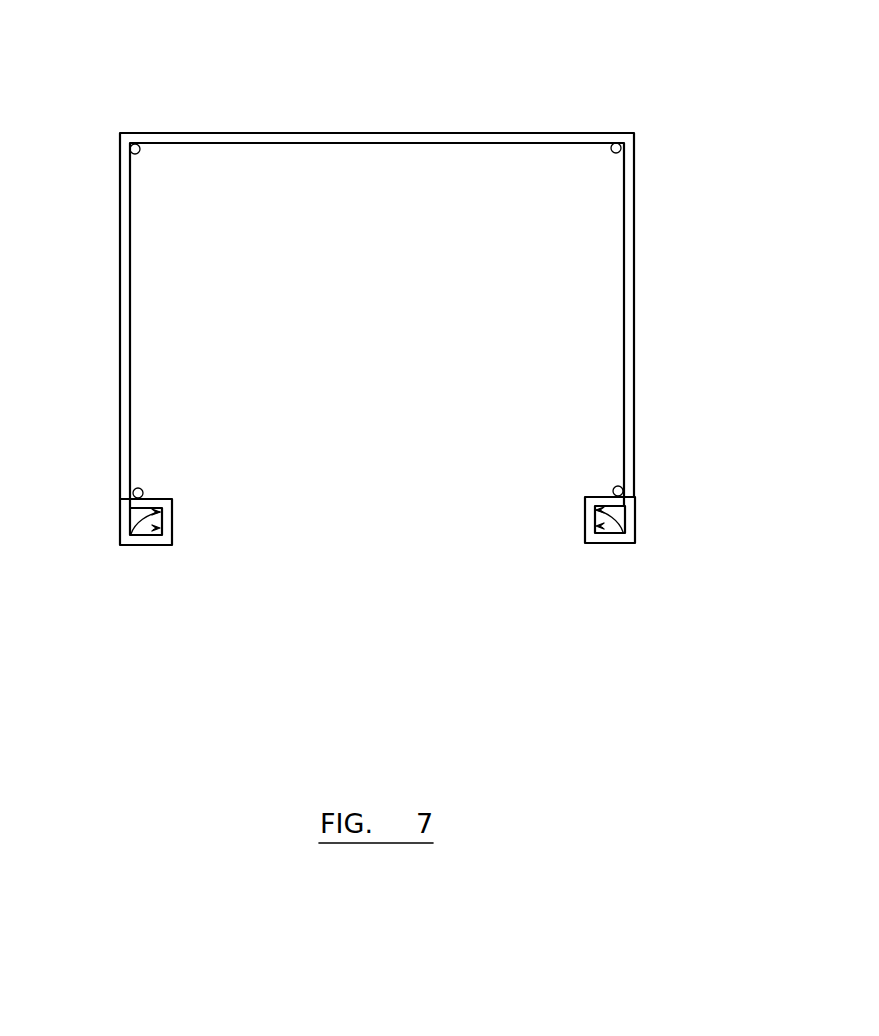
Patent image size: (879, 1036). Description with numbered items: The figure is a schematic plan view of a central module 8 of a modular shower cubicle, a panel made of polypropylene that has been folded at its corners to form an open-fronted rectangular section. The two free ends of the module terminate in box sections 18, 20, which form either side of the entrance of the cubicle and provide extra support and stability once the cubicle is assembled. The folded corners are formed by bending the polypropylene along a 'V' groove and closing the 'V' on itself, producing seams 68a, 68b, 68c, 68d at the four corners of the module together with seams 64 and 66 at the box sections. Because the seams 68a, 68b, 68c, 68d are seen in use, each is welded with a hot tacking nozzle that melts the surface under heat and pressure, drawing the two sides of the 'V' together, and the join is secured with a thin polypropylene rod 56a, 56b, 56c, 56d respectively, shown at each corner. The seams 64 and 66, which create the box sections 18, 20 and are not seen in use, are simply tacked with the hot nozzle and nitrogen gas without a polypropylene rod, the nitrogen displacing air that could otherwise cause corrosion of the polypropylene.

The central module 8 is at (634, 308).
The box section 18 is at (612, 545).
The box section 20 is at (150, 545).
The polypropylene rod 56a is at (133, 492).
The polypropylene rod 56b is at (135, 144).
The polypropylene rod 56c is at (616, 143).
The polypropylene rod 56d is at (623, 490).
The seam 64 is at (610, 526).
The seam 66 is at (140, 528).
The seam 68a is at (146, 481).
The seam 68b is at (143, 163).
The seam 68c is at (601, 157).
The seam 68d is at (611, 479).